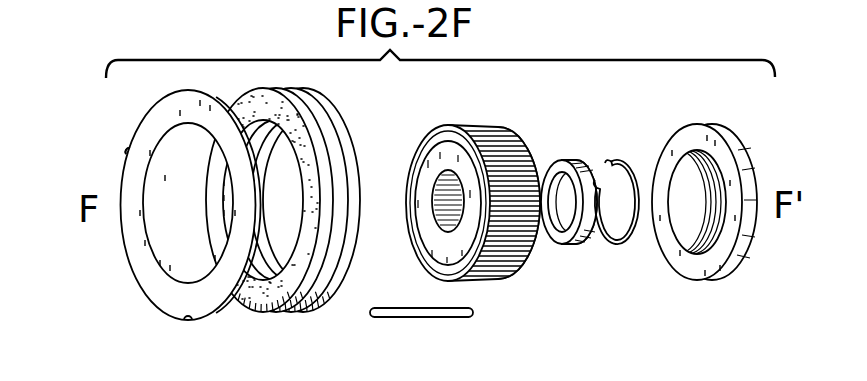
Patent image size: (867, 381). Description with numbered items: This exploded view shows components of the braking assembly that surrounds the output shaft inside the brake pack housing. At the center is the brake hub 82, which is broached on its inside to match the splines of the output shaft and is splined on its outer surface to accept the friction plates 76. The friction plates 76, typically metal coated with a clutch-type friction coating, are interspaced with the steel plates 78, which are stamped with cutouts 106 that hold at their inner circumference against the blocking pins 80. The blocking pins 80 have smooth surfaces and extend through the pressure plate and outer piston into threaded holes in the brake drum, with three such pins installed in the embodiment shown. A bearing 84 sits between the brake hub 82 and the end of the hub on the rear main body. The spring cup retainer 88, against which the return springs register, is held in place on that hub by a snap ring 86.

The friction plates 76 is at (258, 312).
The steel plates 78 is at (155, 205).
The blocking pins 80 is at (410, 318).
The brake hub 82 is at (428, 272).
The bearing 84 is at (555, 246).
The snap ring 86 is at (626, 250).
The spring cup retainer 88 is at (717, 282).
The cutouts 106 is at (128, 151).